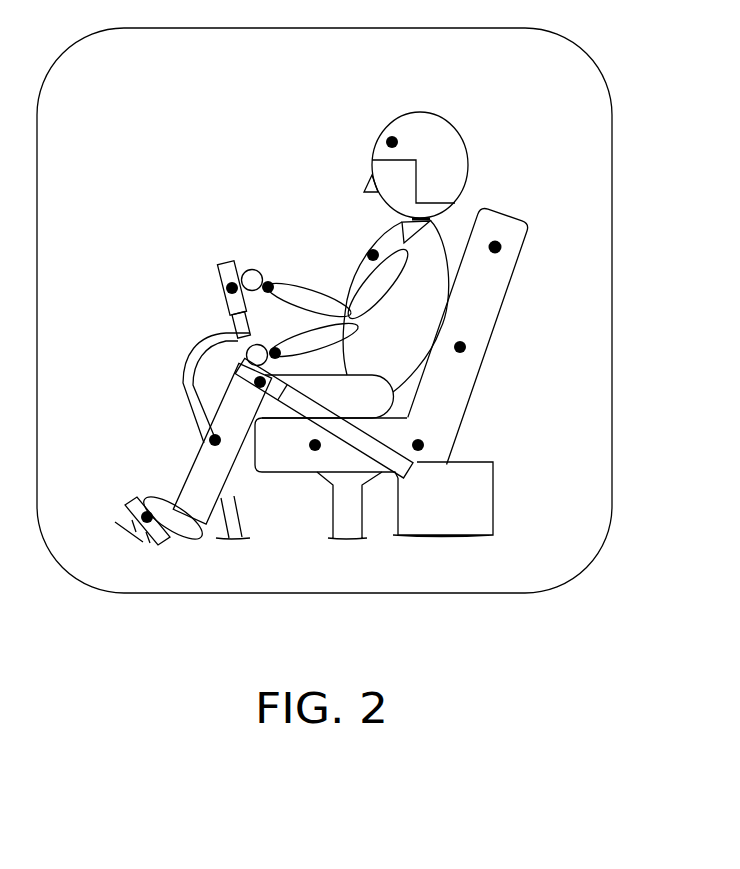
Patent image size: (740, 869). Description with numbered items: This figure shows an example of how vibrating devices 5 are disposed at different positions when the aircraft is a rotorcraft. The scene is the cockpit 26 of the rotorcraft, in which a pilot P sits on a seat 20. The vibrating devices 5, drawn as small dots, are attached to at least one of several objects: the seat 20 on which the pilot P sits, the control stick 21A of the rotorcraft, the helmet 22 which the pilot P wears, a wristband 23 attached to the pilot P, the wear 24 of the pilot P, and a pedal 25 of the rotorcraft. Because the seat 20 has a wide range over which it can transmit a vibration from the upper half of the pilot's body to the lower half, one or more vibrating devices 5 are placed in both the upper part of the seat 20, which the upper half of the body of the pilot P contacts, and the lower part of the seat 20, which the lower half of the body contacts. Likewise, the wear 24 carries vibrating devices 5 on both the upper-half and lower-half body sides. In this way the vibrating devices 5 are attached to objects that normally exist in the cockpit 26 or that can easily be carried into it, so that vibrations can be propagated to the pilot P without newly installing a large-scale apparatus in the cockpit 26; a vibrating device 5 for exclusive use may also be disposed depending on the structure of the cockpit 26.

The cockpit 26 is at (593, 63).
The helmet 22 is at (467, 141).
The pilot P is at (372, 172).
The wear 24 is at (365, 262).
The wristband 23 is at (270, 274).
The control stick 21A is at (223, 262).
The seat 20 is at (512, 208).
The vibrating device 5 is at (501, 247).
The pedal 25 is at (137, 500).